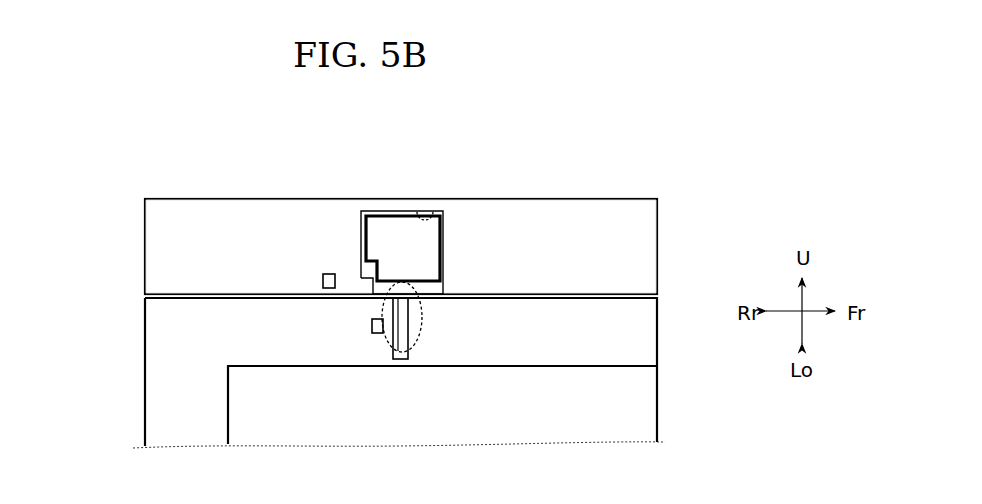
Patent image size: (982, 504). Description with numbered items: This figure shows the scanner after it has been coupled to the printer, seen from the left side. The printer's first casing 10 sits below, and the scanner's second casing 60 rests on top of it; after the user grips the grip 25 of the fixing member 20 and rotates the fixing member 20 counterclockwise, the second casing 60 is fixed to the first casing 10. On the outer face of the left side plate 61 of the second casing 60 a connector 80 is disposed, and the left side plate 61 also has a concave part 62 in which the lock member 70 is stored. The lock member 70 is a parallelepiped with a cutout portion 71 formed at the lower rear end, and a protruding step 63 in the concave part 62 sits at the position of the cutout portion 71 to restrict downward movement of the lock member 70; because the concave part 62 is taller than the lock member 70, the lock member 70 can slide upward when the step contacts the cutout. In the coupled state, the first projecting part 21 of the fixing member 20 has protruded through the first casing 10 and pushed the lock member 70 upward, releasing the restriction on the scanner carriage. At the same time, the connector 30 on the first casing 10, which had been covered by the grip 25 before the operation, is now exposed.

The first casing 10 is at (140, 332).
The fixing member 20 is at (390, 374).
The first projecting part 21 is at (422, 323).
The grip 25 is at (403, 359).
The connector 30 is at (378, 333).
The second casing 60 is at (140, 214).
The left side plate 61 is at (225, 213).
The concave part 62 is at (426, 218).
The protruding step 63 is at (363, 285).
The lock member 70 is at (397, 216).
The cutout portion 71 is at (373, 257).
The connector 80 is at (329, 288).